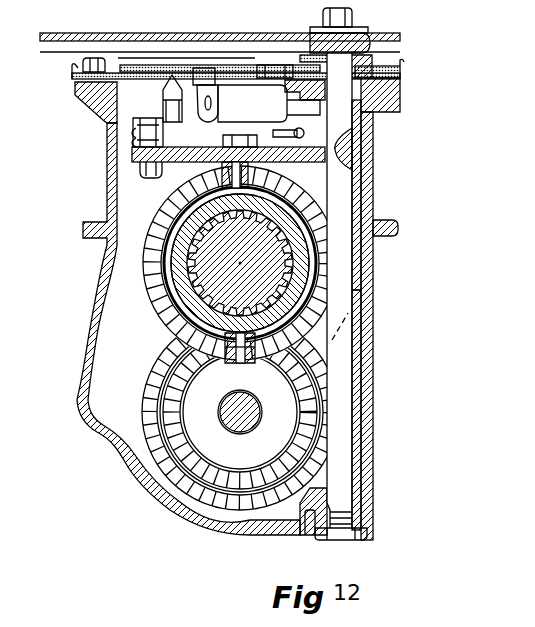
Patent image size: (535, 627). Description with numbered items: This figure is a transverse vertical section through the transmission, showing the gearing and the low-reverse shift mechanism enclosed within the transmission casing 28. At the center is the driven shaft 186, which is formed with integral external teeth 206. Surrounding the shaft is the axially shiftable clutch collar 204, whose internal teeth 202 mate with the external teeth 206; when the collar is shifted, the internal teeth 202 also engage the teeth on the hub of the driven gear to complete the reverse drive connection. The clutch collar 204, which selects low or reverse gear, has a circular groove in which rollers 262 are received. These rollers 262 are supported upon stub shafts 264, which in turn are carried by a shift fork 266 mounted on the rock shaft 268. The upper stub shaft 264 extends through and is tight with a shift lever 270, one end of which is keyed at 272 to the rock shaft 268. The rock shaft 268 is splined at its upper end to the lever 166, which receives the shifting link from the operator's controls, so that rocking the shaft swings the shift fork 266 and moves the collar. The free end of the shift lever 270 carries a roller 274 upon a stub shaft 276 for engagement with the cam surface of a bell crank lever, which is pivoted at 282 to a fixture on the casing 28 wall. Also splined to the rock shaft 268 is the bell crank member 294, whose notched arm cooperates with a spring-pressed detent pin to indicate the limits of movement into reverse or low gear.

The lever 166 is at (224, 33).
The stub shaft 276 is at (106, 118).
The roller 274 is at (135, 125).
The pivot 282 is at (166, 92).
The transmission casing 28 is at (107, 194).
The shift lever 270 is at (182, 158).
The clutch collar 204 is at (148, 258).
The internal teeth 202 is at (173, 270).
The external teeth 206 is at (303, 252).
The driven shaft 186 is at (290, 283).
The rollers 262 is at (327, 209).
The bell crank member 294 is at (378, 114).
The key 272 is at (374, 160).
The stub shafts 264 is at (355, 178).
The shift fork 266 is at (332, 344).
The rock shaft 268 is at (352, 418).